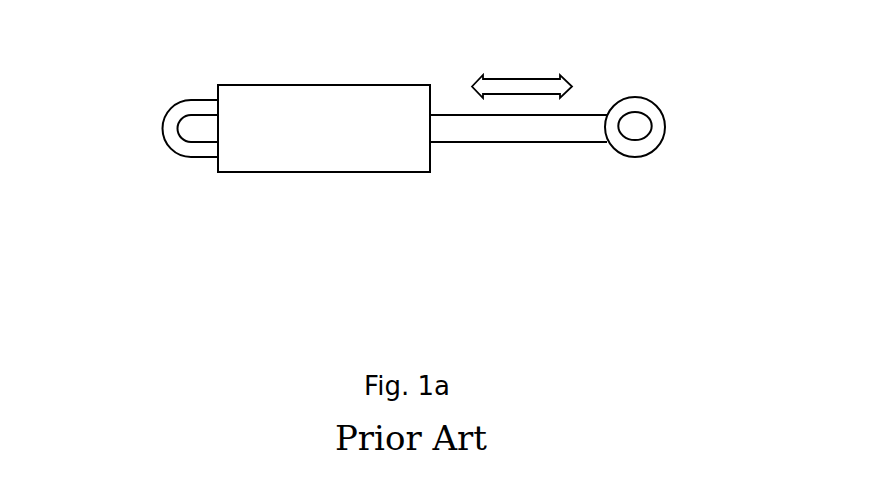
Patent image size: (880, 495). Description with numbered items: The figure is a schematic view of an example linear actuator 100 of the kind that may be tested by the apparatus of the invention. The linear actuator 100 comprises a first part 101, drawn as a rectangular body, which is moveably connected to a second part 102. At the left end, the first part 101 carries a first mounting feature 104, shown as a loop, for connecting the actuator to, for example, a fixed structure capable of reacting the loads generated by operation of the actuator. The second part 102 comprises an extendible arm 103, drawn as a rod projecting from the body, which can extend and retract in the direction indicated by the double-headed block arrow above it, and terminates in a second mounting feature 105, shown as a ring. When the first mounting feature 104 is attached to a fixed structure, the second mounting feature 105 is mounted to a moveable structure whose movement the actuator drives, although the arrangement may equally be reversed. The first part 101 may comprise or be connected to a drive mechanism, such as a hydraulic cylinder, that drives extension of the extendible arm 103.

The linear actuator 100 is at (122, 52).
The first part 101 is at (247, 174).
The second part 102 is at (601, 138).
The extendible arm 103 is at (578, 122).
The first mounting feature 104 is at (141, 130).
The second mounting feature 105 is at (688, 137).